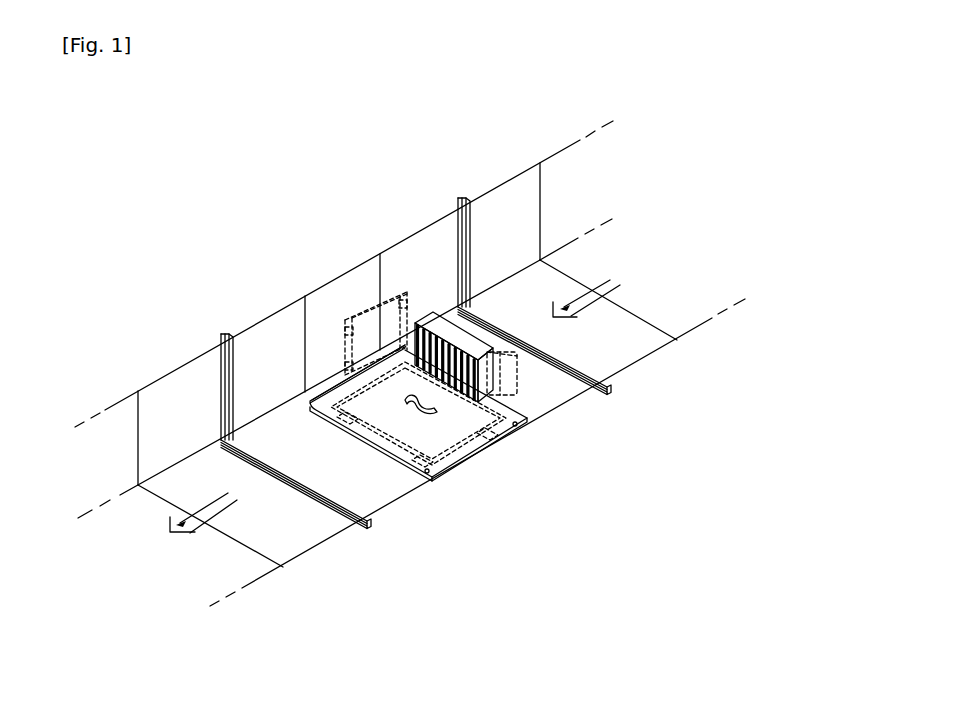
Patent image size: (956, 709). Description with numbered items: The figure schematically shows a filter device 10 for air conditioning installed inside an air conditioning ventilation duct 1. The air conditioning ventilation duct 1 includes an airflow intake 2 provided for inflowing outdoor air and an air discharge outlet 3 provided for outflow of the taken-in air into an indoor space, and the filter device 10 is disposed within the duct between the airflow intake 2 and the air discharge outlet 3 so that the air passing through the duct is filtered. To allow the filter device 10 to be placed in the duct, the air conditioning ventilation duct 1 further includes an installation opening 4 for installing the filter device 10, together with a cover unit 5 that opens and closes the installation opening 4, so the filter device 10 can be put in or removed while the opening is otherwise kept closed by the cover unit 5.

The air conditioning ventilation duct 1 is at (490, 201).
The airflow intake 2 is at (590, 329).
The air discharge outlet 3 is at (282, 492).
The installation opening 4 is at (332, 391).
The cover unit 5 is at (386, 443).
The filter device for air conditioning 10 is at (346, 306).